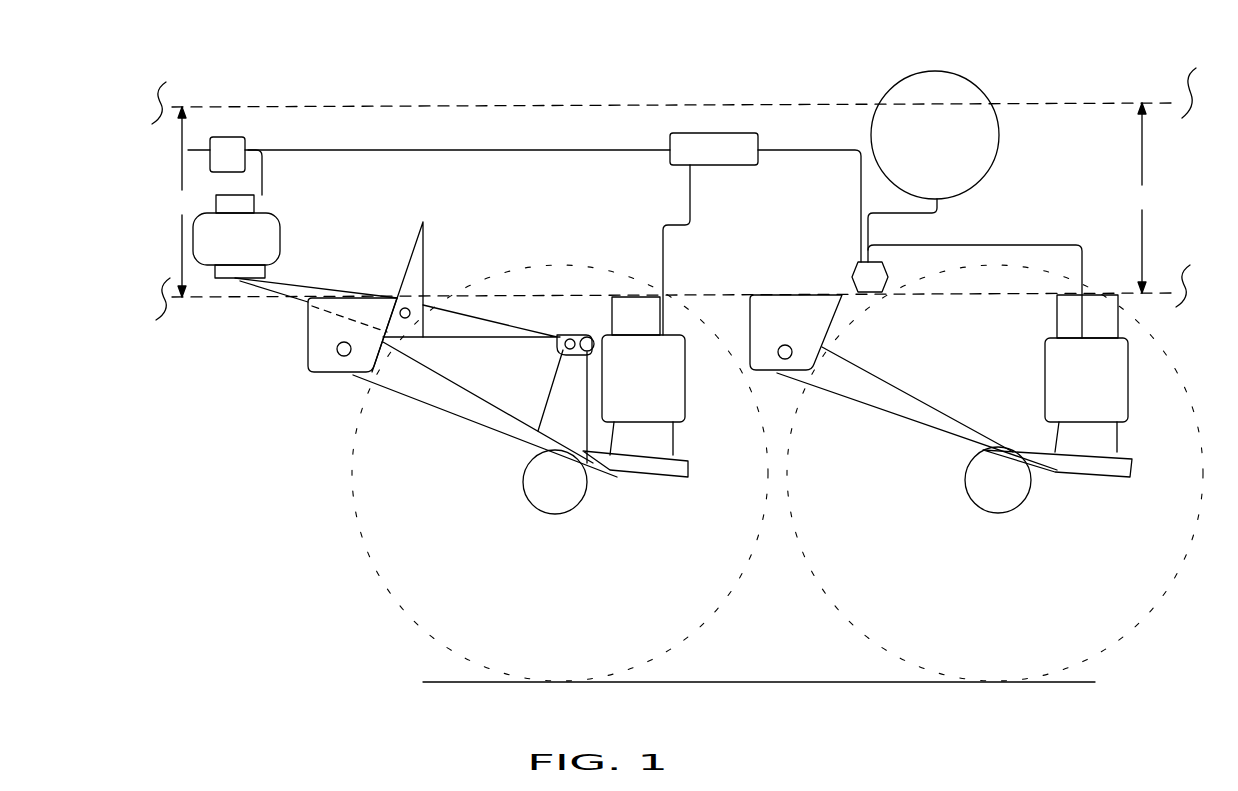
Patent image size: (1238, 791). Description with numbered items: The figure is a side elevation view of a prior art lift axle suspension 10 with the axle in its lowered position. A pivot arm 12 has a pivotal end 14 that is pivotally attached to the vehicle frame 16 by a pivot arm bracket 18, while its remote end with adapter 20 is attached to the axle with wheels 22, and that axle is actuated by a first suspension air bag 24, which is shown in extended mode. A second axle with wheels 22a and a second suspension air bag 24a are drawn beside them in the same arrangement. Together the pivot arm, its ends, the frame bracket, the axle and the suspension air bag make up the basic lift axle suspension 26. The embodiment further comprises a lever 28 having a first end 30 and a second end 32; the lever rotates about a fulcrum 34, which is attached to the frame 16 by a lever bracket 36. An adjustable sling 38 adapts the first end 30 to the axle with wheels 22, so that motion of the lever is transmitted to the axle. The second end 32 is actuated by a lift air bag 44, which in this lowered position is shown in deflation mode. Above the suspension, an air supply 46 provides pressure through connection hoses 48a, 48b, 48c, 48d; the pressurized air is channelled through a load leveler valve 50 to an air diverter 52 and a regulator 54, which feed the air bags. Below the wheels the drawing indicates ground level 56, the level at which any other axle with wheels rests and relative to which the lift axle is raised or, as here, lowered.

The lift axle suspension 10 is at (204, 567).
The pivot arm 12 is at (480, 432).
The pivotal end 14 is at (343, 352).
The vehicle frame 16 is at (661, 200).
The pivot arm bracket 18 is at (300, 340).
The remote end with adapter 20 is at (612, 475).
The axle with wheels 22 is at (555, 480).
The axle 22a is at (998, 480).
The first suspension air bag 24 is at (657, 372).
The air spring 24a is at (1102, 372).
The basic lift axle suspension 26 is at (1140, 570).
The lever 28 is at (462, 320).
The first end 30 is at (582, 332).
The second end 32 is at (245, 282).
The fulcrum 34 is at (400, 305).
The lever bracket 36 is at (418, 250).
The adjustable sling 38 is at (545, 400).
The lift air bag 44 is at (272, 233).
The air supply 46 is at (945, 135).
The connection hose 48a is at (1008, 245).
The connection hose 48b is at (830, 148).
The connection hose 48c is at (675, 248).
The connection hose 48d is at (440, 150).
The load leveler valve 50 is at (875, 290).
The air diverter 52 is at (722, 150).
The regulator 54 is at (225, 145).
The ground level 56 is at (423, 682).